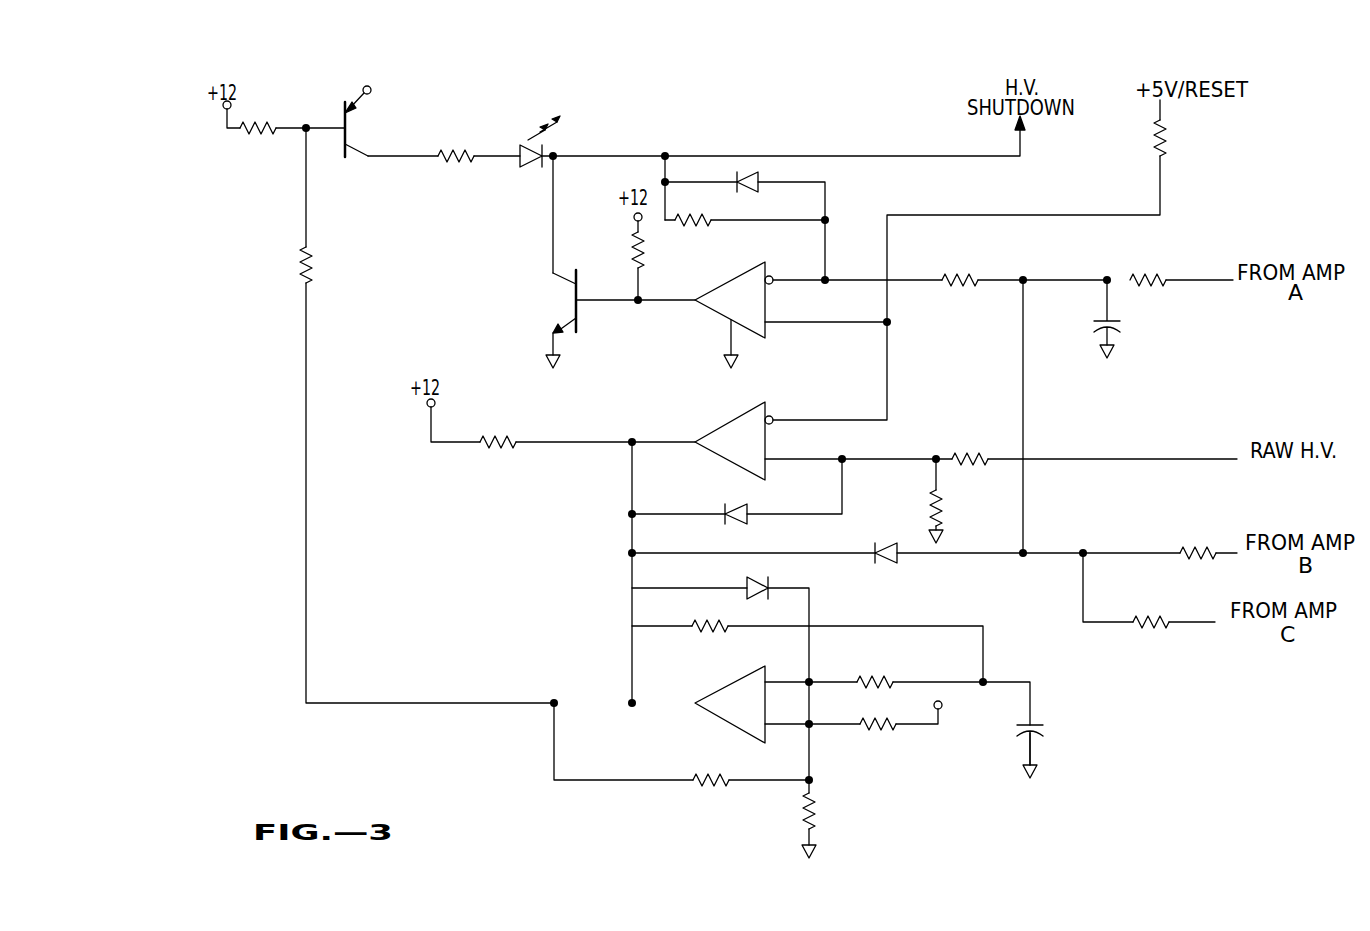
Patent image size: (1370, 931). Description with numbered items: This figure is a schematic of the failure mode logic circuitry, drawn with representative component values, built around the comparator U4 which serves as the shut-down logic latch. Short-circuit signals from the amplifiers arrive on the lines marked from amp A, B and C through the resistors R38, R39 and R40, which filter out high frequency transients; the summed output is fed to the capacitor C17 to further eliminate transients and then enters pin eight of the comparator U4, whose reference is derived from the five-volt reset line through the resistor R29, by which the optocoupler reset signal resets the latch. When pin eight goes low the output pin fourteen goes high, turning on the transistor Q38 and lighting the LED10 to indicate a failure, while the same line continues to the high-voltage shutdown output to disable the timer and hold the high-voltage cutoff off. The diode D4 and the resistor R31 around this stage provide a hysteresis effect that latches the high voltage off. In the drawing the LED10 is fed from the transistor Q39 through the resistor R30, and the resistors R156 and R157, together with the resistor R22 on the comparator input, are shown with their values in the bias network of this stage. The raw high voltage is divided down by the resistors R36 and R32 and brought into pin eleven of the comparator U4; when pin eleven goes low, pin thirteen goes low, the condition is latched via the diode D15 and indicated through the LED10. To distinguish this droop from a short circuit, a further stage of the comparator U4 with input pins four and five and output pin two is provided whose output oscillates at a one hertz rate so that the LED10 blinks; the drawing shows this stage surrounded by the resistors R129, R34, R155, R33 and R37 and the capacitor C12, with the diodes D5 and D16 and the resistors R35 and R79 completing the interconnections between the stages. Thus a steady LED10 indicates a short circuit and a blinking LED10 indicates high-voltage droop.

The resistor 5.1K R156 is at (256, 128).
The resistor 10K R157 is at (280, 271).
The PNP transistor Q39 is at (373, 118).
The resistor 1K R30 is at (456, 156).
The LED LED10 is at (547, 129).
The transistor Q38 is at (553, 319).
The diode D4 is at (764, 191).
The resistor R31 is at (745, 220).
The resistor 36K R22 is at (618, 252).
The comparator U4 is at (736, 500).
The resistor R29 is at (1139, 143).
The resistor 5.1K R35 is at (964, 280).
The resistor R38 is at (1153, 280).
The capacitor C17 is at (1127, 320).
The resistor 10K R79 is at (499, 444).
The resistor R36 is at (976, 460).
The resistor R32 is at (954, 501).
The diode D5 is at (751, 522).
The diode D15 is at (884, 540).
The diode D16 is at (757, 577).
The resistor R39 is at (1198, 552).
The resistor R40 is at (1151, 623).
The resistor 3.3M R129 is at (706, 627).
The resistor 36K R34 is at (875, 681).
The resistor 100K R155 is at (877, 728).
The capacitor 0.1 C12 is at (1051, 740).
The resistor 100K R33 is at (704, 778).
The resistor 100K R37 is at (835, 819).